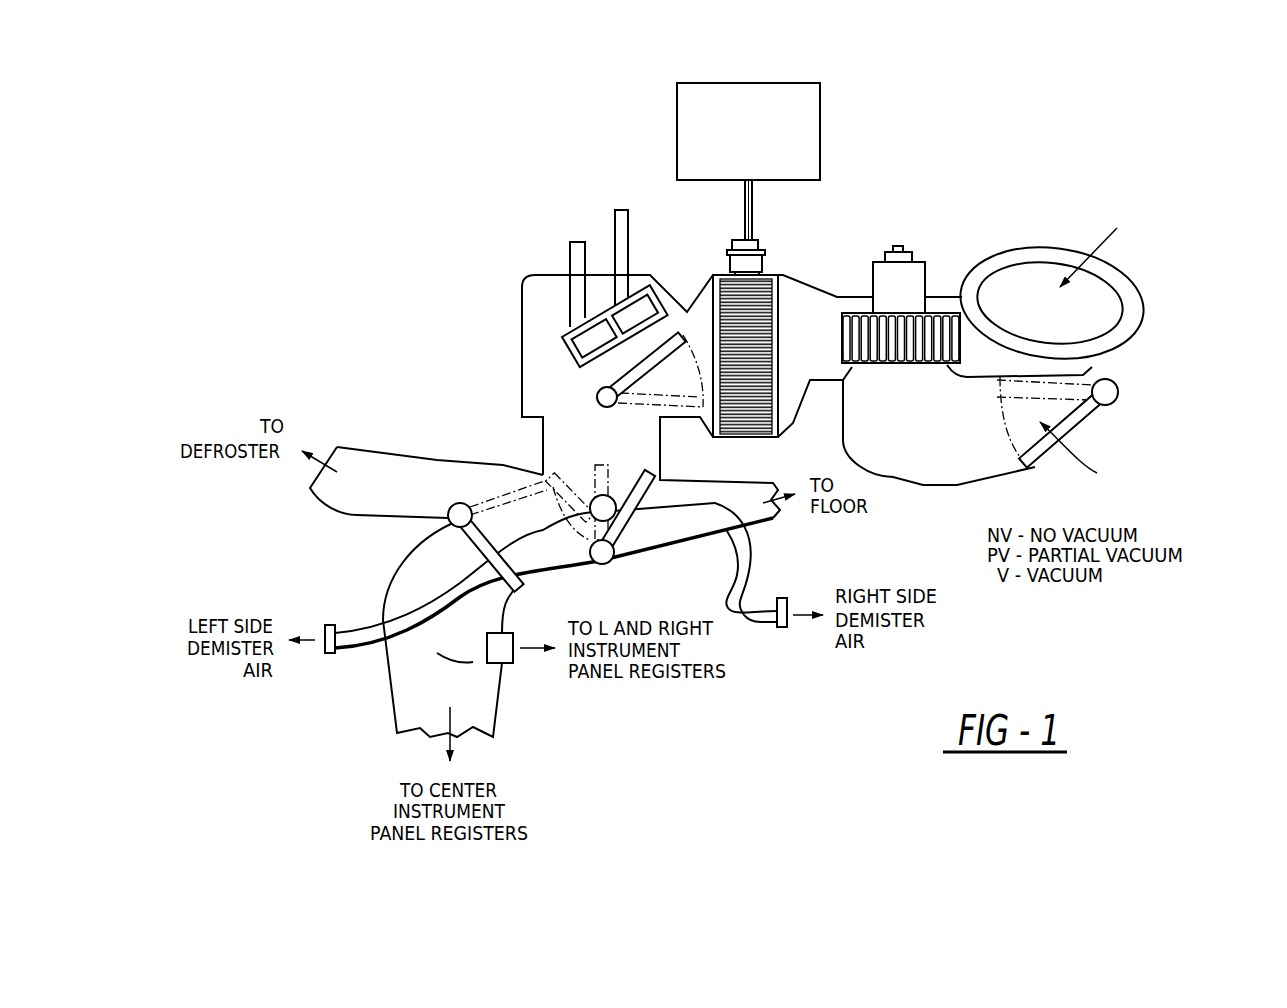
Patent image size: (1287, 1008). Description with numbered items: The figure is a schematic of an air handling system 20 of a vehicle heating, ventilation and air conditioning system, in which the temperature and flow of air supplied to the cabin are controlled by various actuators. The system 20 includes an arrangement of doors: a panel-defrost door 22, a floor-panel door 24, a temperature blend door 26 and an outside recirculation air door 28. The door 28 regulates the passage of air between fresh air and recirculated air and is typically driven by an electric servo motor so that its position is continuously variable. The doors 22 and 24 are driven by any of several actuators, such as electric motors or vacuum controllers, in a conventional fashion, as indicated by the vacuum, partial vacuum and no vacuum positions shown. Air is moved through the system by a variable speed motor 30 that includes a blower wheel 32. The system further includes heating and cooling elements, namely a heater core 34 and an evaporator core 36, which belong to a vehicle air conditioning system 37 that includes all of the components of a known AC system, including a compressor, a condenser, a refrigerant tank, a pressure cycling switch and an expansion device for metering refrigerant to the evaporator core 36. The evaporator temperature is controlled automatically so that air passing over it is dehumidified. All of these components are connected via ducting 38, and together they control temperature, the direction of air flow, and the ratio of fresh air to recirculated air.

The air handling system 20 is at (755, 422).
The panel-defrost door 22 is at (493, 550).
The floor-panel door 24 is at (640, 553).
The temperature blend door 26 is at (625, 370).
The outside recirculation air door 28 is at (1083, 430).
The variable speed motor 30 is at (873, 290).
The blower wheel 32 is at (943, 313).
The heater core 34 is at (563, 357).
The evaporator core 36 is at (783, 313).
The vehicle air conditioning system 37 is at (677, 131).
The ducting 38 is at (927, 490).